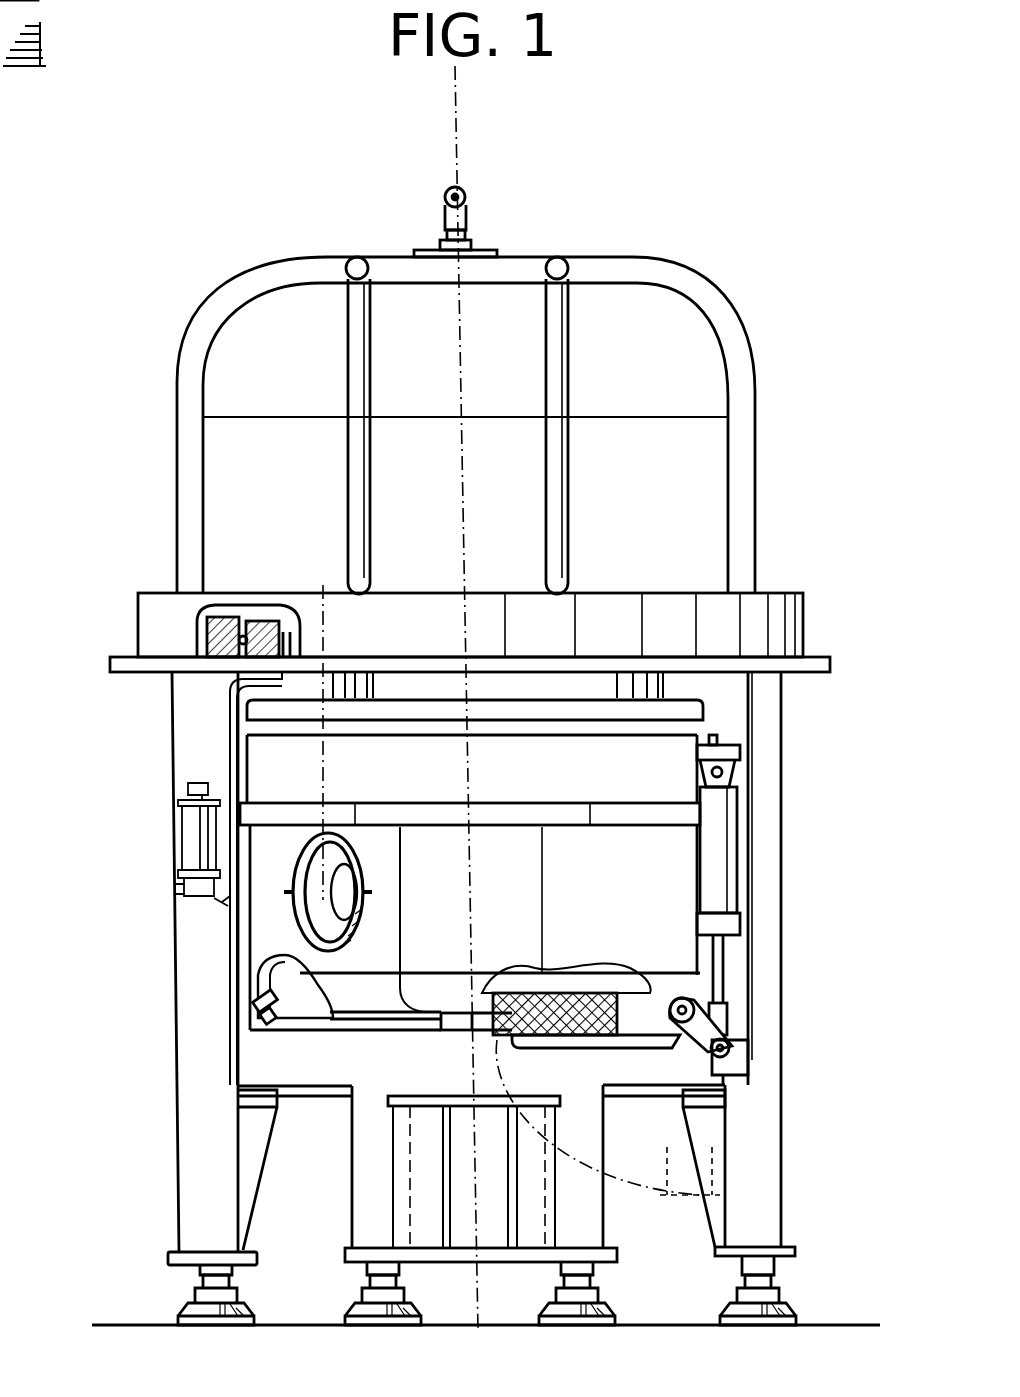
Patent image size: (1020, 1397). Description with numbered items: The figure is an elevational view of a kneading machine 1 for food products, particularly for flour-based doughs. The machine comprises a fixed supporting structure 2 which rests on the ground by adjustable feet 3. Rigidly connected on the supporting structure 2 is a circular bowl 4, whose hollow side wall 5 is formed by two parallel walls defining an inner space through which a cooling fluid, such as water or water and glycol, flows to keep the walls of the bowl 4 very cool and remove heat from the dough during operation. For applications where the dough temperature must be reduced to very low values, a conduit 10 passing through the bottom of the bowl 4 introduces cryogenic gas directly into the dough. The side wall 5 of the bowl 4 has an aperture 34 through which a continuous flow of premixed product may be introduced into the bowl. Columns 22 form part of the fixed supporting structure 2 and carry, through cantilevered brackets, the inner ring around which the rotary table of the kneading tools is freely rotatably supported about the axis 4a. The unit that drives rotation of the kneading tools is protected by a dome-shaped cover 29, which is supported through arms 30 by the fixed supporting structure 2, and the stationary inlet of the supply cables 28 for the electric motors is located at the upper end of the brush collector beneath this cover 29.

The kneading machine 1 is at (770, 412).
The fixed supporting structure 2 is at (172, 1076).
The adjustable feet 3 is at (372, 1292).
The circular bowl 4 is at (246, 942).
The axis 4a is at (456, 160).
The side wall 5 is at (665, 858).
The conduit 10 is at (262, 1020).
The columns 22 is at (760, 1100).
The supply cables 28 is at (445, 198).
The dome-shaped cover 29 is at (740, 337).
The arms 30 is at (182, 386).
The aperture 34 is at (370, 925).